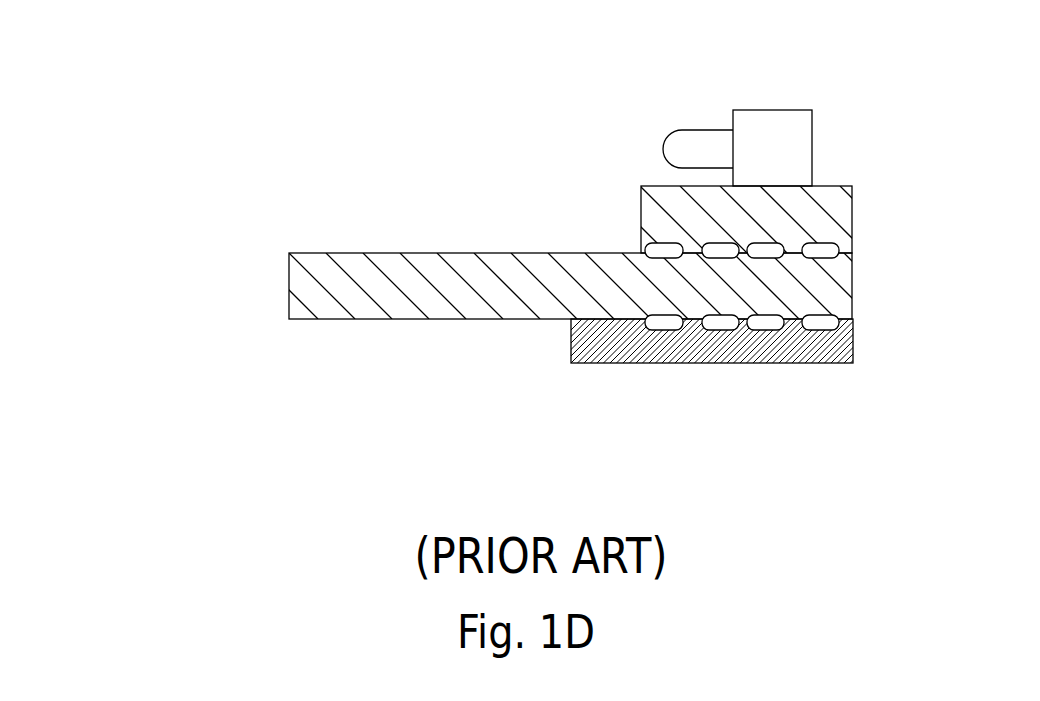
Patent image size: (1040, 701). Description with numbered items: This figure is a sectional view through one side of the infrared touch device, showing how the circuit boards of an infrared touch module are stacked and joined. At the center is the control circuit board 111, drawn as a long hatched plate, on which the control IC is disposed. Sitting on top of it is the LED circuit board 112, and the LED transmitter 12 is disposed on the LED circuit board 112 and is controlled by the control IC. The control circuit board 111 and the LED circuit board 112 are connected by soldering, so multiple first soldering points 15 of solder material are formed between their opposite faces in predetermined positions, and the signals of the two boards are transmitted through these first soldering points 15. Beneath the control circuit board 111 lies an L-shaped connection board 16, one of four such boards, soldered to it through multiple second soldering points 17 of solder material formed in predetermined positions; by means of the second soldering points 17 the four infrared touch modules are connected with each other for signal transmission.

The LED transmitter 12 is at (768, 132).
The LED circuit board 112 is at (832, 212).
The first soldering points 15 is at (838, 258).
The control circuit board 111 is at (778, 302).
The L-shaped connection boards 16 is at (728, 352).
The second soldering points 17 is at (710, 325).